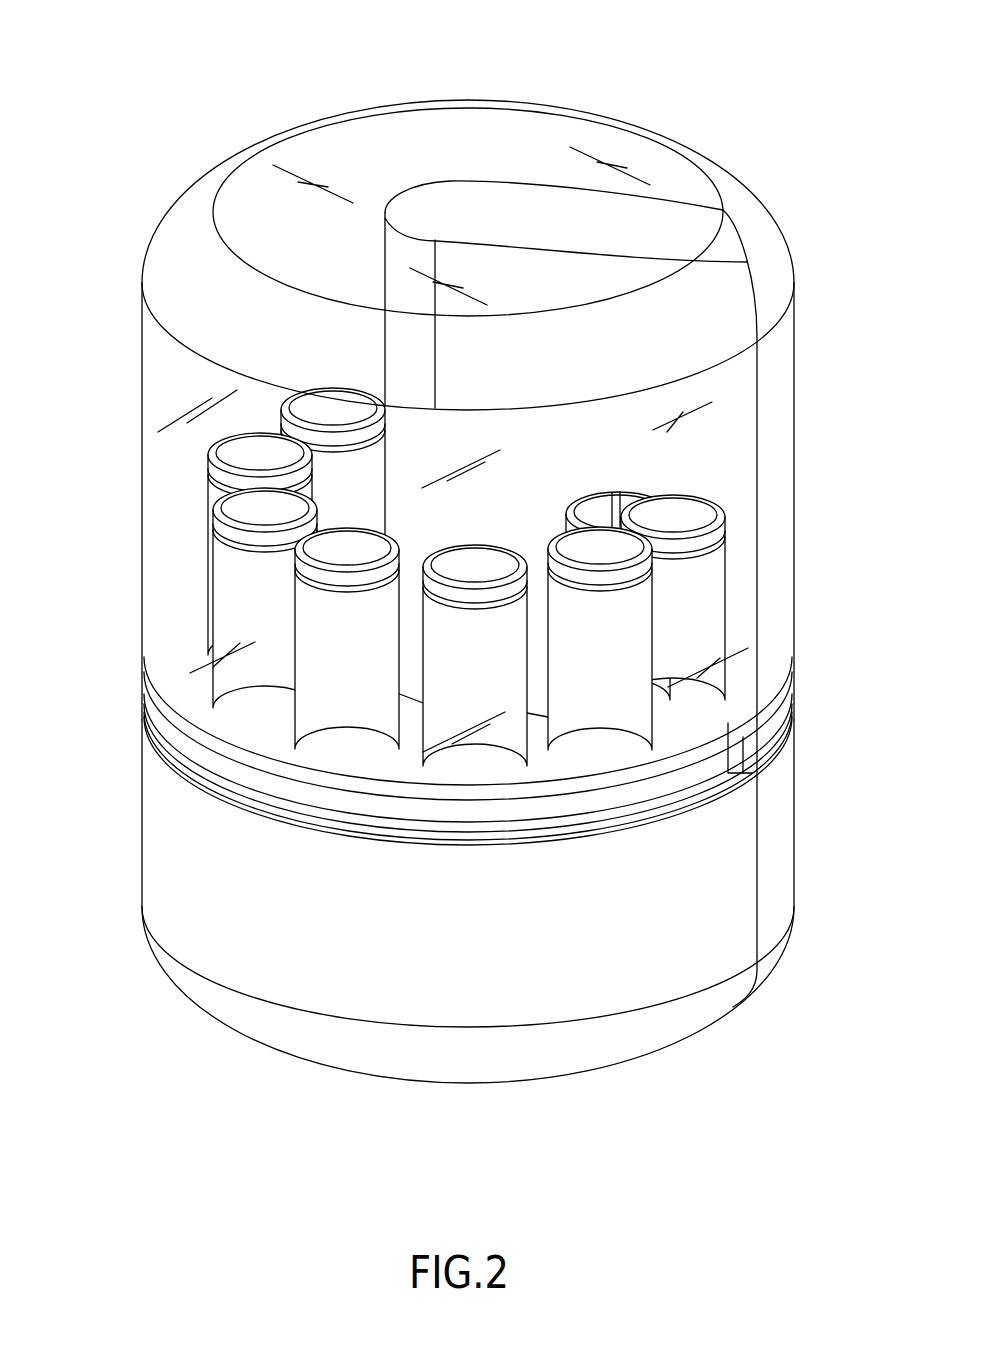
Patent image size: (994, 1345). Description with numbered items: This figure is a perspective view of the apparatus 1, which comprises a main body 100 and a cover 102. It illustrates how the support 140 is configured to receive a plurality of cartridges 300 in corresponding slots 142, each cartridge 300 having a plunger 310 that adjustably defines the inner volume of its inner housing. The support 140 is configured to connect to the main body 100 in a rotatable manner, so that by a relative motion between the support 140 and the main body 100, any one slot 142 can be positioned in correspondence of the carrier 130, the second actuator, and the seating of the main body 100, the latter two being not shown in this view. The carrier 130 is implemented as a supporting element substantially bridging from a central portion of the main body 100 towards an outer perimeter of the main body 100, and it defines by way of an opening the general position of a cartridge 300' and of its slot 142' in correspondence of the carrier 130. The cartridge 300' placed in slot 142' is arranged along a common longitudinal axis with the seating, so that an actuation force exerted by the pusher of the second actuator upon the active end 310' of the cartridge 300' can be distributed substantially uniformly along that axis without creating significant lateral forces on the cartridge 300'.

The apparatus 1 is at (834, 43).
The main body 100 is at (603, 949).
The cover 102 is at (142, 378).
The carrier 130 is at (540, 287).
The support 140 is at (240, 788).
The slots 142 is at (426, 780).
The slot 142' is at (517, 772).
The cartridges 300 is at (185, 598).
The cartridge 300' is at (752, 590).
The plunger 310 is at (186, 544).
The active end 310' is at (750, 519).